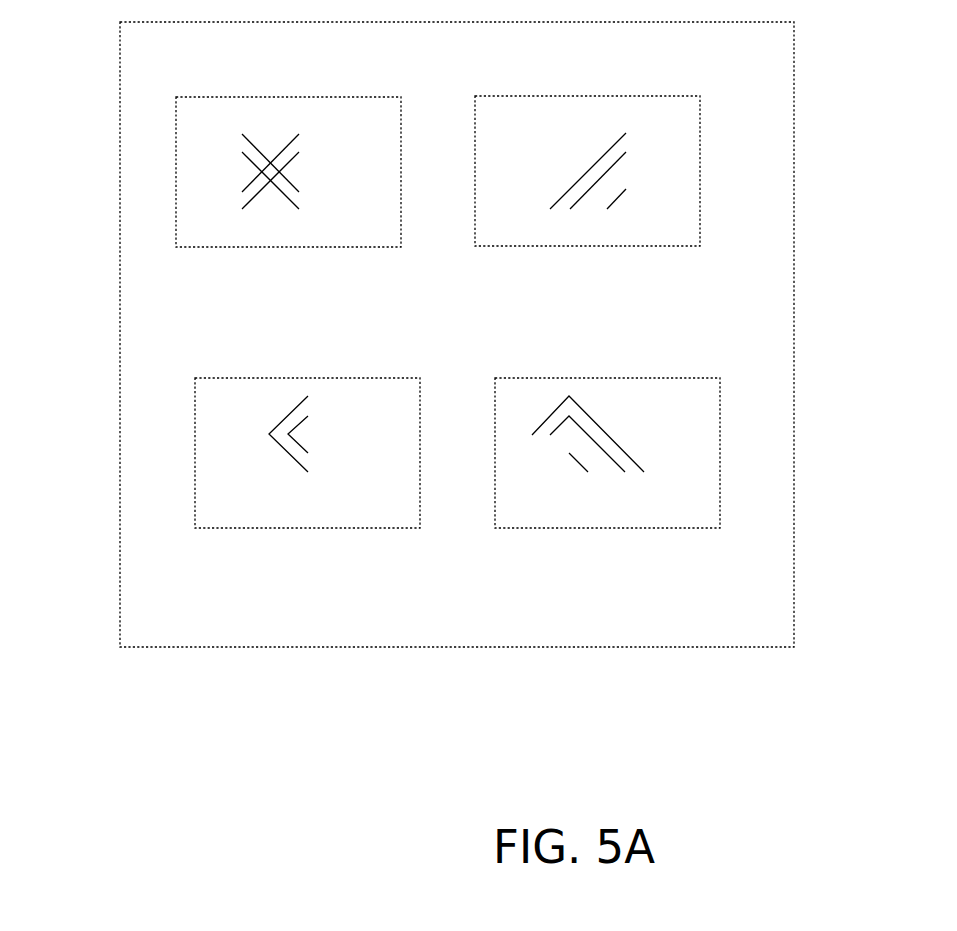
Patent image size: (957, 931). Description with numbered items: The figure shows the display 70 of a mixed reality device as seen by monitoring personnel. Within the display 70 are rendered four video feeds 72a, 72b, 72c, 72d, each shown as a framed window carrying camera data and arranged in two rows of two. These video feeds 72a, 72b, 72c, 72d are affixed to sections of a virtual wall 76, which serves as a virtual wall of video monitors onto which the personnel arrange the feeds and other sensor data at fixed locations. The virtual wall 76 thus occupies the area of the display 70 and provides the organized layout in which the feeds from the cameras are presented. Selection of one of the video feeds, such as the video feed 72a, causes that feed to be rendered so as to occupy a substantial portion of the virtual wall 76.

The display 70 is at (794, 153).
The video feed 72a is at (288, 197).
The video feed 72b is at (587, 196).
The video feed 72c is at (307, 472).
The video feed 72d is at (607, 472).
The virtual wall 76 is at (473, 622).